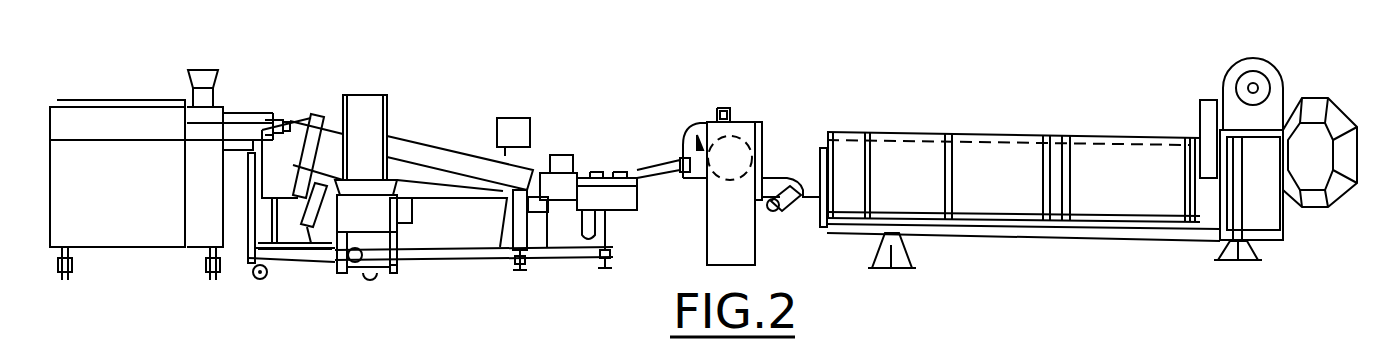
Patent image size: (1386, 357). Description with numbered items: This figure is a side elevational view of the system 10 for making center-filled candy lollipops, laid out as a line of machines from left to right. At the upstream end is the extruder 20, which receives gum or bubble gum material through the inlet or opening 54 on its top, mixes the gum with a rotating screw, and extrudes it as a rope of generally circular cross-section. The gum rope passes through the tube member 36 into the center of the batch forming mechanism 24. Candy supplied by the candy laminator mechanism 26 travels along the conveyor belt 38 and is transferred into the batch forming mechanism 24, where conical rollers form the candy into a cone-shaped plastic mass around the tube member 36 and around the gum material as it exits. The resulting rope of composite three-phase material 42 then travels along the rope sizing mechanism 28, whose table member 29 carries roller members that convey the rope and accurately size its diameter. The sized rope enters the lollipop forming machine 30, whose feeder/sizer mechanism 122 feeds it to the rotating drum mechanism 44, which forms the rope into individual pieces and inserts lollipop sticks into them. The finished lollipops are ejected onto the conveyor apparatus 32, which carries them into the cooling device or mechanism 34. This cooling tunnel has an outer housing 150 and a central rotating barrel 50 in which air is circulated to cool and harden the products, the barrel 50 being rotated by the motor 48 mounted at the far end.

The system 10 is at (397, 33).
The extruder 20 is at (107, 150).
The inlet or opening 54 is at (202, 75).
The tube member 36 is at (295, 125).
The conveyor belt 38 is at (378, 112).
The candy laminator mechanism 26 is at (355, 220).
The batch forming mechanism 24 is at (460, 240).
The rope sizing mechanism 28 is at (587, 205).
The rope of composite three-phase material 42 is at (608, 173).
The table member 29 is at (642, 205).
The feeder/sizer mechanism 122 is at (690, 143).
The rotating drum mechanism 44 is at (740, 133).
The lollipop forming machine 30 is at (713, 240).
The conveyor apparatus 32 is at (792, 202).
The rotating barrel 50 is at (1041, 169).
The outer housing 150 is at (1078, 137).
The motor 48 is at (1207, 112).
The cooling device or mechanism 34 is at (1007, 237).